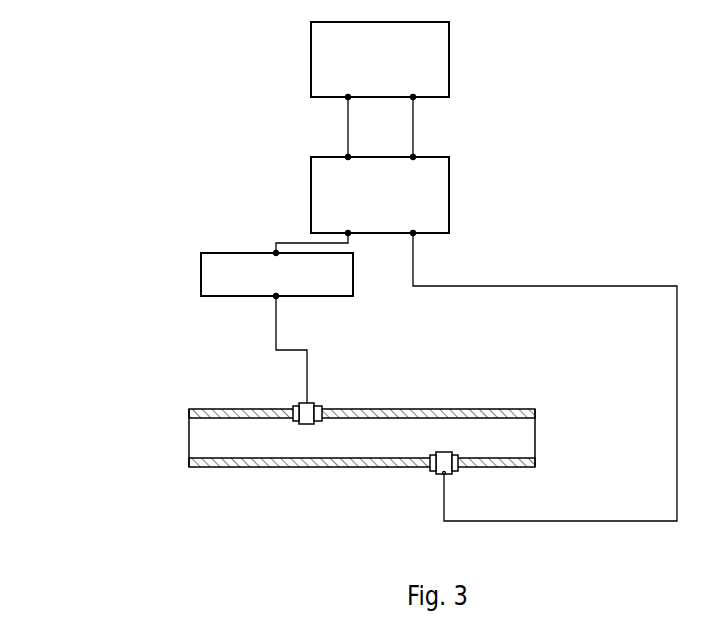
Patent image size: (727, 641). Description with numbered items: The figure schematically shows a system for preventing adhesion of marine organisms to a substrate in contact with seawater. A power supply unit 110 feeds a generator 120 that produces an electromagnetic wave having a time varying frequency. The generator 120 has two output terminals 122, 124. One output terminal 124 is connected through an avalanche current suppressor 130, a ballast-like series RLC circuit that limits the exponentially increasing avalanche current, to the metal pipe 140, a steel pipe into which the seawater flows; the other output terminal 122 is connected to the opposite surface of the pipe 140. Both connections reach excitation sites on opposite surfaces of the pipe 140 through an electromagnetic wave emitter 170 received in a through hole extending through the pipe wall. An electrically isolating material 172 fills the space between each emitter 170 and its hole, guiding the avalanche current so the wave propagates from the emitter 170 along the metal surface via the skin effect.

The power supply unit 110 is at (343, 61).
The generator 120 is at (425, 187).
The output terminal 122 is at (415, 232).
The output terminal 124 is at (346, 232).
The avalanche current suppressor 130 is at (215, 276).
The metal pipe 140 is at (532, 408).
The electromagnetic wave emitter 170 is at (293, 408).
The electrically isolating material 172 is at (433, 452).